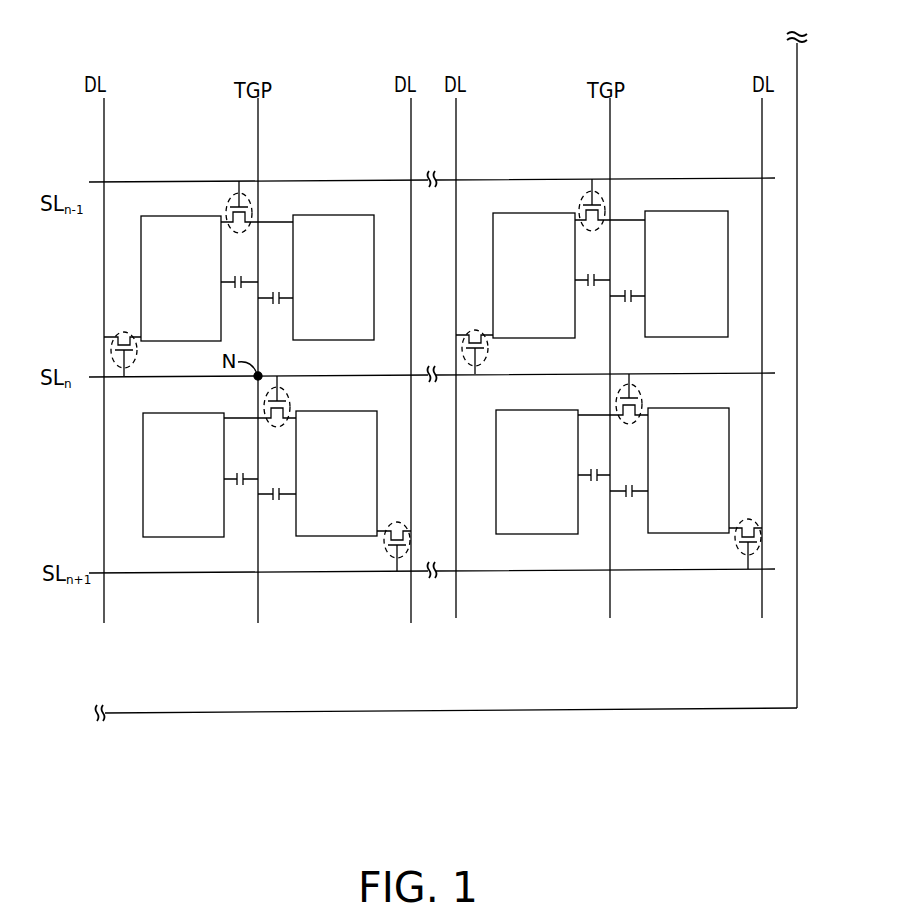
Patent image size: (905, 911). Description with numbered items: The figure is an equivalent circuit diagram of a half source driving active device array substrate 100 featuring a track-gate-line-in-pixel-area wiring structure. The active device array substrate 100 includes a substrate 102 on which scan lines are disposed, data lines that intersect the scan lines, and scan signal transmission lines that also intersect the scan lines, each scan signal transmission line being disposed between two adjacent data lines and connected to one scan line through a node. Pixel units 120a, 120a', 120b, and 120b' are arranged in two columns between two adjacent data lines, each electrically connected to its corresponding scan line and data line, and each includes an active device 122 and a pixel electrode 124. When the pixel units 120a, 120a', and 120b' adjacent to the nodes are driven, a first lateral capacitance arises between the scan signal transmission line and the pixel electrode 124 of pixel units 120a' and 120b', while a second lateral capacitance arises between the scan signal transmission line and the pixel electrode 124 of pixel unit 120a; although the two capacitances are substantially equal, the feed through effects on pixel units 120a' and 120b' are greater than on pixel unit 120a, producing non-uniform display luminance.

The active device array substrate 100 is at (732, 710).
The substrate 102 is at (778, 682).
The pixel unit 120a is at (498, 378).
The pixel unit 120b is at (603, 383).
The pixel unit 120a' is at (197, 193).
The pixel unit 120b' is at (251, 383).
The active device 122 is at (123, 335).
The pixel electrode 124 is at (188, 216).